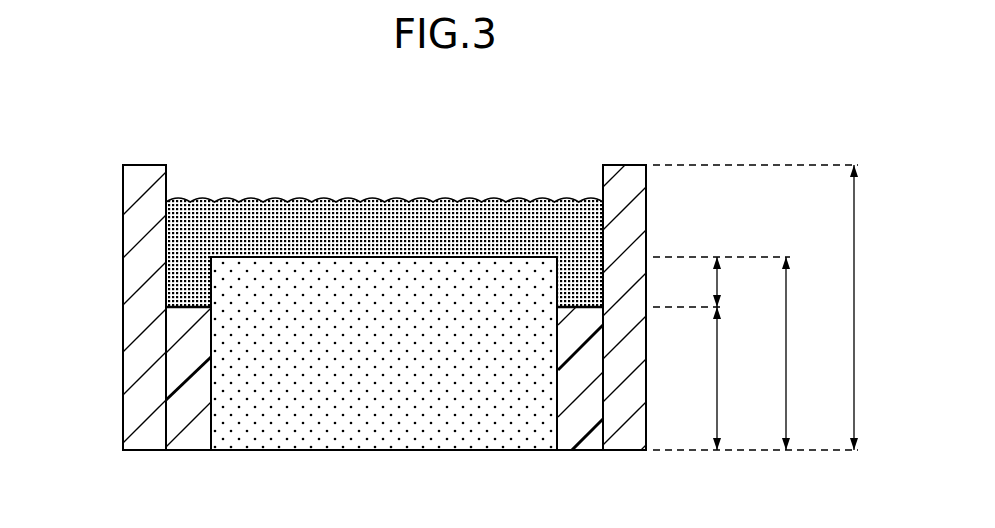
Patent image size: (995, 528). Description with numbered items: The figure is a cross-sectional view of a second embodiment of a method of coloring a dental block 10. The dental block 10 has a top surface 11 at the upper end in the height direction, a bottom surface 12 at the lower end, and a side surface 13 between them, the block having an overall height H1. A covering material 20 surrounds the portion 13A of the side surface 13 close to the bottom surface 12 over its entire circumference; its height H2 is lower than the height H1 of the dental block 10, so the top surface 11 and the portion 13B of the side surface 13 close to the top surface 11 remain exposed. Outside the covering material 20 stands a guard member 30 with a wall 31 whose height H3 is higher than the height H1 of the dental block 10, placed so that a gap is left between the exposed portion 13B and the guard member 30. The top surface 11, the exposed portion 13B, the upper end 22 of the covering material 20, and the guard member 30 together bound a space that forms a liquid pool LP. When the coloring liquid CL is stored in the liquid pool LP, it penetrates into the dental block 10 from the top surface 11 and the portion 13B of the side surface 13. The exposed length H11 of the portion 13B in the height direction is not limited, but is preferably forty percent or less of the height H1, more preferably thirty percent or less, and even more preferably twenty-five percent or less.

The dental block 10 is at (340, 451).
The top surface 11 is at (322, 257).
The bottom surface 12 is at (415, 451).
The side surface 13 is at (210, 355).
The portion close to the bottom surface 13A is at (212, 425).
The portion close to the top surface 13B is at (212, 272).
The covering material 20 is at (188, 392).
The upper end 22 is at (192, 307).
The guard member 30 is at (622, 230).
The wall 31 is at (166, 177).
The coloring liquid CL is at (425, 199).
The liquid pool LP is at (603, 226).
The height H1 is at (802, 353).
The height H11 is at (741, 282).
The height H2 is at (734, 378).
The height H3 is at (870, 307).